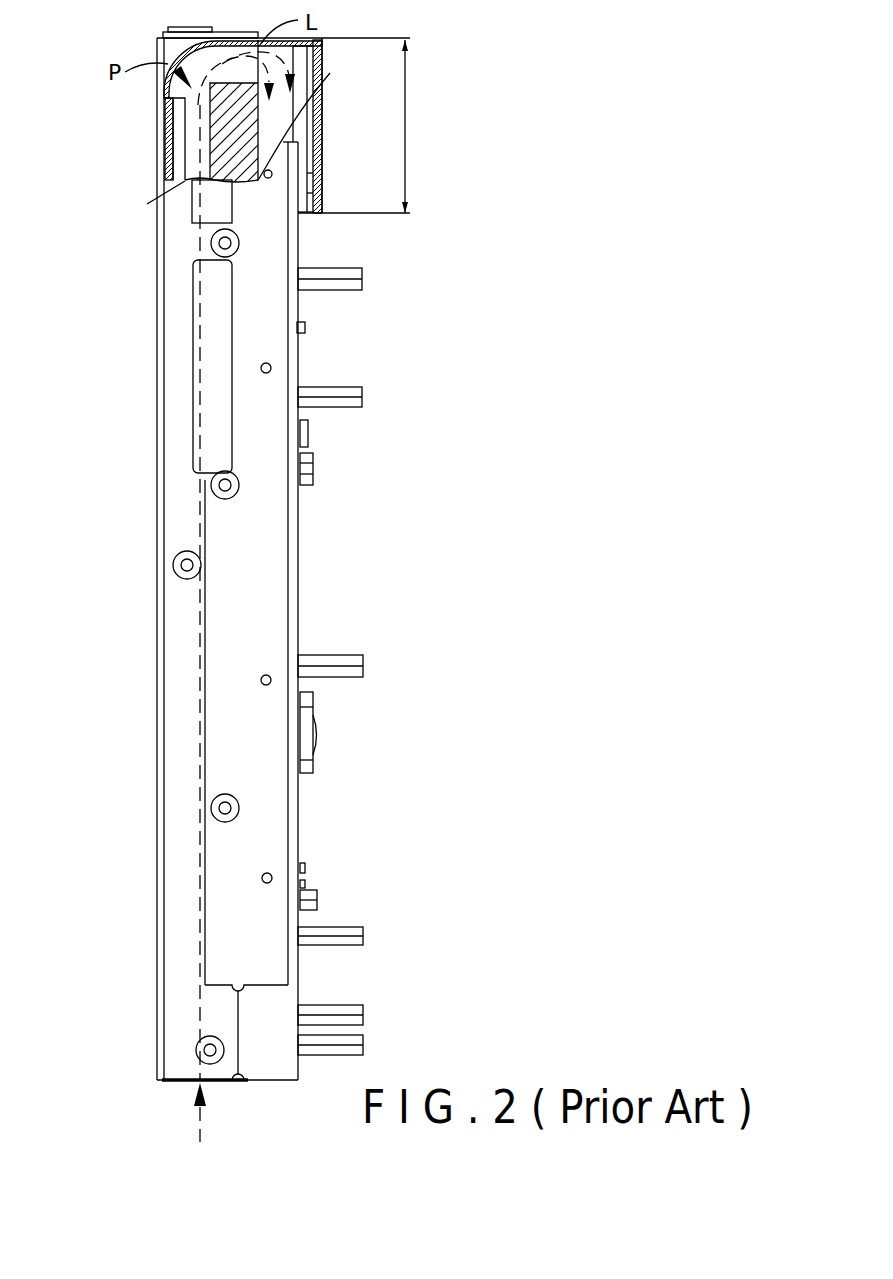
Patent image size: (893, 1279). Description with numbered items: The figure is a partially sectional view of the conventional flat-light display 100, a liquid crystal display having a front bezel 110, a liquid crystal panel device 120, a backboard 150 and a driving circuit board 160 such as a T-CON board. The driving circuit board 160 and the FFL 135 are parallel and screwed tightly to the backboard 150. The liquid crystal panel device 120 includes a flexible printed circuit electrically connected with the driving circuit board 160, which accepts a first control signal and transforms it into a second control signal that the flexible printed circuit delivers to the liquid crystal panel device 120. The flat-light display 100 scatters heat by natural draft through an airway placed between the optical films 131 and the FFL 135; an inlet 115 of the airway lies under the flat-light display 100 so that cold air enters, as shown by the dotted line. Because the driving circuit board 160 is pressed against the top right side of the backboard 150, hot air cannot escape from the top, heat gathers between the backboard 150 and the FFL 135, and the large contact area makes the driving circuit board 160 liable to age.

The flat-light display 100 is at (648, 80).
The front bezel 110 is at (180, 31).
The inlet 115 is at (165, 1095).
The liquid crystal panel device 120 is at (168, 139).
The optical films 131 is at (183, 178).
The FFL 135 is at (247, 173).
The backboard 150 is at (292, 360).
The driving circuit board 160 is at (321, 214).